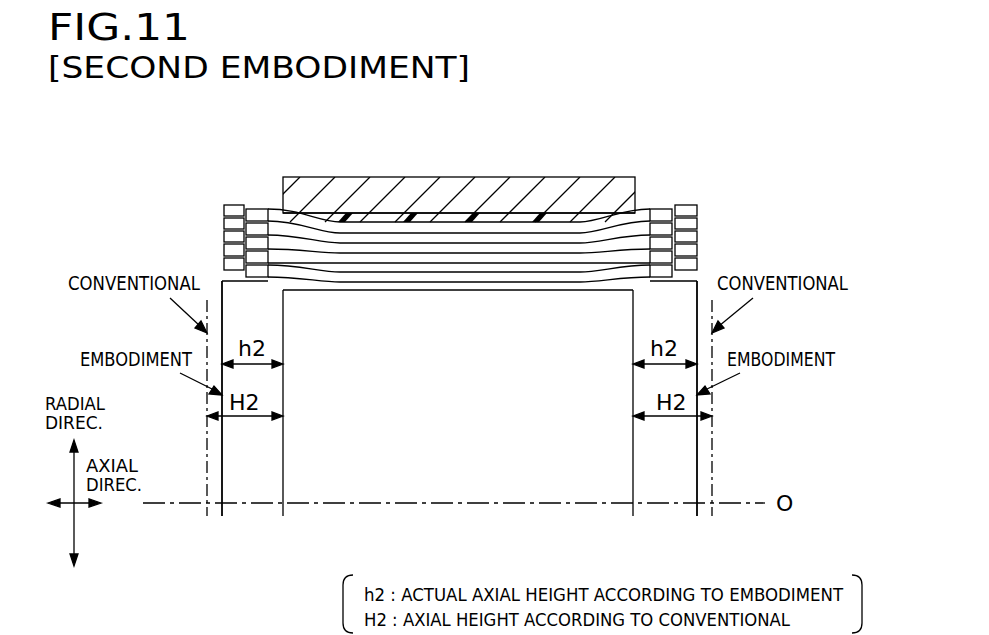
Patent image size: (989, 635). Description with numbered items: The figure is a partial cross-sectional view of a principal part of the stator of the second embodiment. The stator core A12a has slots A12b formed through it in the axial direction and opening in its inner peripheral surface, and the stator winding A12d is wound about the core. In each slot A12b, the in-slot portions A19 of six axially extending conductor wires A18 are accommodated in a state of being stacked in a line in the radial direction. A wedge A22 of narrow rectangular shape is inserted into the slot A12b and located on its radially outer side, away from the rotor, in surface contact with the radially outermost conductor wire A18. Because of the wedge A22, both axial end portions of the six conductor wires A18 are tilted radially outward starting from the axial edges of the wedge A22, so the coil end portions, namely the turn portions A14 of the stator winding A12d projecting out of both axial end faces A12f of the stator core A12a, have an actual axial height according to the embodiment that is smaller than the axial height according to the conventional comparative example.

The stator core A12a is at (360, 172).
The slot A12b is at (492, 222).
The stator winding A12d is at (260, 200).
The axial end face A12f is at (283, 460).
The turn portion A14 is at (236, 206).
The conductor wire A18 is at (702, 207).
The in-slot portion A19 is at (416, 223).
The wedge A22 is at (554, 218).